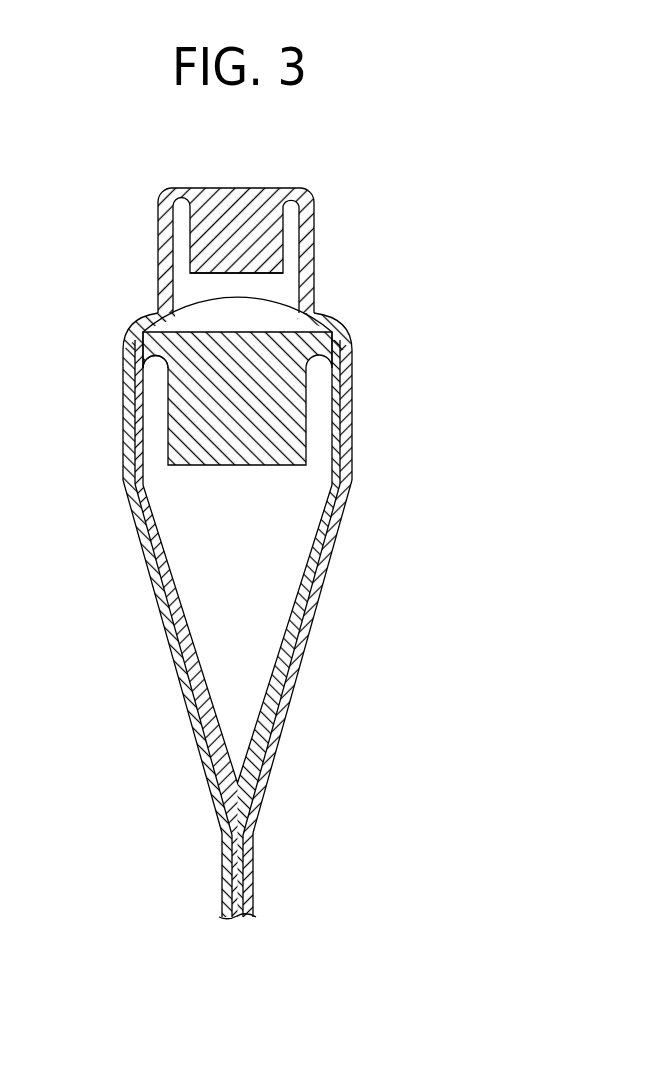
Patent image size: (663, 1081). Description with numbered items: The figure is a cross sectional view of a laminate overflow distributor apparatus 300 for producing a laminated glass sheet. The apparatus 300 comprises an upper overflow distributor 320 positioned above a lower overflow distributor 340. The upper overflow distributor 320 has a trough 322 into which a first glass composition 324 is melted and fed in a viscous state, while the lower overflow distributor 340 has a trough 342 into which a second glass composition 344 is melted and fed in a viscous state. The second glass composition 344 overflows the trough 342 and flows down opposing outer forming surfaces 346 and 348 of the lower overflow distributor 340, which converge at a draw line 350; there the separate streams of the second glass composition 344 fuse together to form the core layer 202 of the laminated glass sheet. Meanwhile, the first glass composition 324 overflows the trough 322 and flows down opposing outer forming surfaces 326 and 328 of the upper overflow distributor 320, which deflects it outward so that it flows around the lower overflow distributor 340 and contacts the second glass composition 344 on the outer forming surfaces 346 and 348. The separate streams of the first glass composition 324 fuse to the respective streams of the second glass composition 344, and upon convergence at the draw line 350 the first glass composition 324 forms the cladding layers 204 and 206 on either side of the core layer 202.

The laminate overflow distributor apparatus 300 is at (363, 233).
The upper overflow distributor 320 is at (303, 220).
The trough 322 is at (178, 245).
The first glass composition 324 is at (239, 188).
The outer forming surface 326 is at (173, 283).
The outer forming surface 328 is at (302, 268).
The lower overflow distributor 340 is at (322, 393).
The trough 342 is at (168, 413).
The second glass composition 344 is at (228, 342).
The outer forming surface 346 is at (158, 529).
The outer forming surface 348 is at (310, 551).
The draw line 350 is at (240, 787).
The core layer 202 is at (233, 838).
The cladding layer 204 is at (222, 883).
The cladding layer 206 is at (254, 877).